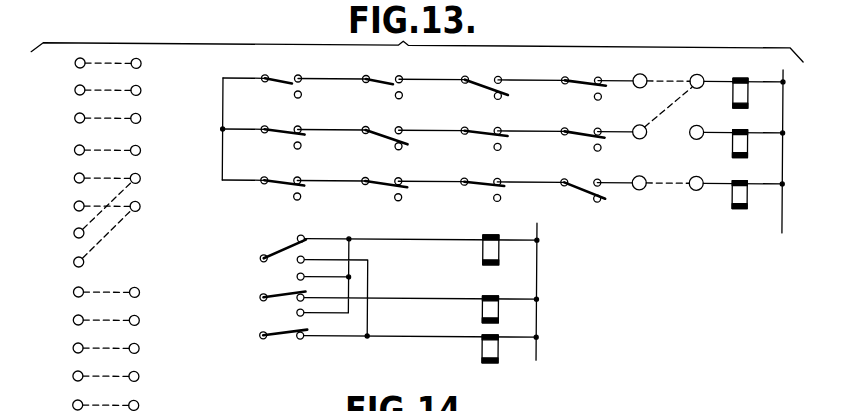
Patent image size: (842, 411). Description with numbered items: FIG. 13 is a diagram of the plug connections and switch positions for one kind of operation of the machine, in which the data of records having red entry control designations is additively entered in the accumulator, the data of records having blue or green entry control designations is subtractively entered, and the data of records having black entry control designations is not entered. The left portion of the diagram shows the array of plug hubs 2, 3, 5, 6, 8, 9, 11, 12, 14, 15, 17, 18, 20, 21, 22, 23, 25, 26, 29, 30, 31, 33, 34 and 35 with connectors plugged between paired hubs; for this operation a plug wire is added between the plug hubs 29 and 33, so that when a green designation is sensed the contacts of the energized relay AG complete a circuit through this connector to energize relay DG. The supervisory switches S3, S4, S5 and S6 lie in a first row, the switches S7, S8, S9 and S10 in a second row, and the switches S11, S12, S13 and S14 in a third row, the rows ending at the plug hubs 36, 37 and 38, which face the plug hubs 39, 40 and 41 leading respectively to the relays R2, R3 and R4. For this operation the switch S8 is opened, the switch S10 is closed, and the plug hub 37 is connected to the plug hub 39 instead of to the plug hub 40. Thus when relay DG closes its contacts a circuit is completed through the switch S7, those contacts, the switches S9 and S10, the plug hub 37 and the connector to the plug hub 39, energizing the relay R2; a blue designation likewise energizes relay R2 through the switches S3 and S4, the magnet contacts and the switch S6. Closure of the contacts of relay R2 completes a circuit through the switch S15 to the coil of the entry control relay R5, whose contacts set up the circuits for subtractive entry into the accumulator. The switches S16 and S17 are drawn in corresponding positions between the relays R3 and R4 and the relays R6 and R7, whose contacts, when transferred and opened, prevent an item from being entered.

The terminal 2 is at (67, 63).
The terminal 3 is at (67, 90).
The terminal 5 is at (144, 63).
The terminal 6 is at (144, 90).
The terminal 8 is at (67, 118).
The terminal 9 is at (67, 150).
The terminal 11 is at (149, 118).
The terminal 12 is at (148, 150).
The terminal 14 is at (61, 178).
The terminal 15 is at (61, 206).
The terminal 17 is at (61, 233).
The terminal 18 is at (61, 262).
The terminal 20 is at (60, 292).
The terminal 21 is at (60, 320).
The terminal 22 is at (148, 178).
The terminal 23 is at (148, 206).
The terminal 25 is at (147, 292).
The terminal 26 is at (147, 320).
The plug hub 29 is at (60, 348).
The terminal 30 is at (60, 376).
The terminal 31 is at (60, 403).
The plug hub 33 is at (147, 348).
The terminal 34 is at (147, 376).
The terminal 35 is at (147, 403).
The contact terminal 36 is at (647, 73).
The plug hub 37 is at (637, 123).
The plug hub 38 is at (645, 171).
The plug hub 39 is at (704, 73).
The plug hub 40 is at (699, 122).
The plug hub 41 is at (699, 173).
The switch S3 is at (287, 88).
The switch S4 is at (388, 88).
The switch S5 is at (486, 88).
The switch S6 is at (587, 88).
The switch S7 is at (288, 138).
The switch S8 is at (386, 138).
The switch S9 is at (486, 138).
The switch S10 is at (588, 138).
The switch S11 is at (288, 189).
The switch S12 is at (389, 189).
The switch S13 is at (489, 189).
The switch S14 is at (588, 189).
The switch S15 is at (284, 246).
The switch S16 is at (279, 292).
The switch S17 is at (278, 328).
The relay R2 is at (746, 104).
The relay R3 is at (746, 154).
The relay R4 is at (746, 205).
The entry control relay R5 is at (483, 252).
The relay R6 is at (483, 311).
The relay R7 is at (483, 349).